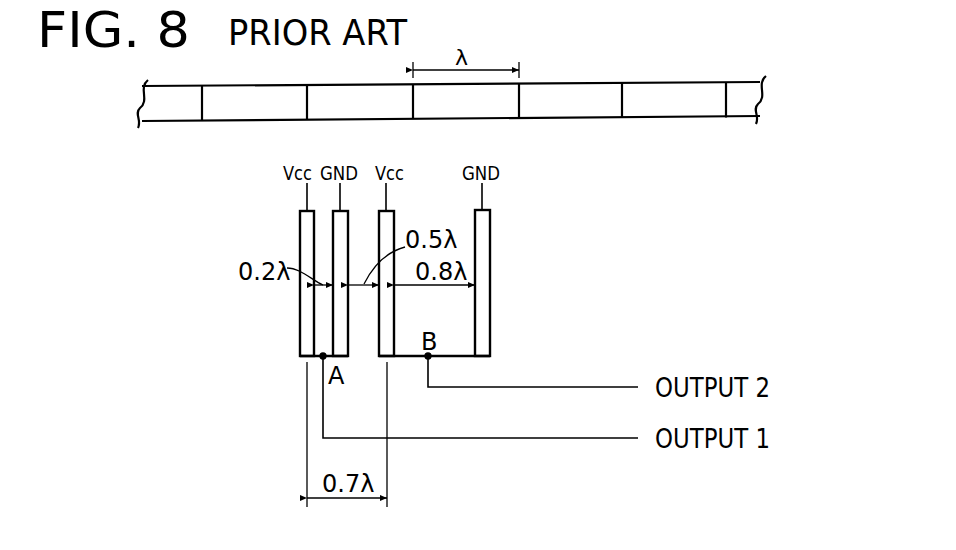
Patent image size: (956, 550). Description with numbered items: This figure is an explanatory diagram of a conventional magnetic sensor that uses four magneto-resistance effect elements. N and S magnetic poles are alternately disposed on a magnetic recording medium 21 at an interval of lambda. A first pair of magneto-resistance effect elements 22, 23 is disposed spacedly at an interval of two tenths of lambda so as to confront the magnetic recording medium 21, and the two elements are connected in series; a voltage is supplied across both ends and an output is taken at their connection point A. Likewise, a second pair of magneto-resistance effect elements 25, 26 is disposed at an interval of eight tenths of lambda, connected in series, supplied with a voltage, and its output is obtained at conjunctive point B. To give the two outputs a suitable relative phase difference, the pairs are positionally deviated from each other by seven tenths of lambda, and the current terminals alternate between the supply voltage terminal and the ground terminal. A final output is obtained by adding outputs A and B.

The magnetic recording medium 21 is at (643, 82).
The magneto-resistance effect element 22 is at (300, 231).
The magneto-resistance effect element 23 is at (338, 337).
The magneto-resistance effect element 25 is at (394, 218).
The magneto-resistance effect element 26 is at (490, 262).